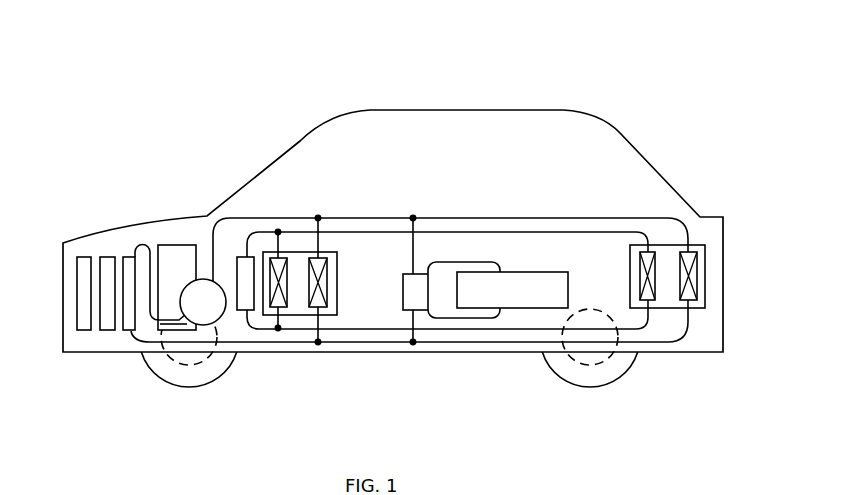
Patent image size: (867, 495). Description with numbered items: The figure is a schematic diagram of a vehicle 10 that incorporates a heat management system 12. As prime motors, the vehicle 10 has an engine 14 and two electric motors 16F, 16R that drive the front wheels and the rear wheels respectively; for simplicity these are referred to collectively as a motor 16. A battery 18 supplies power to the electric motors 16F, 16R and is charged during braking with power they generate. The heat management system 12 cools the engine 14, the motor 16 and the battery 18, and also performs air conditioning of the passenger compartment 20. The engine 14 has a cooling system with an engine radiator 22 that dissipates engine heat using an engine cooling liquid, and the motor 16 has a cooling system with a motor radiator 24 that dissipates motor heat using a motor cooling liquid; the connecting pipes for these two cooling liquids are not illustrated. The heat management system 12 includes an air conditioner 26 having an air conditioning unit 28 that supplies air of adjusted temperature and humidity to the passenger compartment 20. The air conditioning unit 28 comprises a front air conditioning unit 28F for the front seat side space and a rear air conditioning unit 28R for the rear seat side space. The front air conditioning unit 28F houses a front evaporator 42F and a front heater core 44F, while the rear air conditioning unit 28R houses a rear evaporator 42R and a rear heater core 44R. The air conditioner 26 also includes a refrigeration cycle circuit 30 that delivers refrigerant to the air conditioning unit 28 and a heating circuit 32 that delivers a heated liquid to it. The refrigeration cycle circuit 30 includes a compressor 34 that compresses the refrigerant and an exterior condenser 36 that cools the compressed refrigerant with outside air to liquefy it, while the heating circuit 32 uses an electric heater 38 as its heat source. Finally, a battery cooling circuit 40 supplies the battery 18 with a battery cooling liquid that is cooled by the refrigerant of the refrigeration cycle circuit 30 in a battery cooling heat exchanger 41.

The vehicle 10 is at (447, 87).
The heat management system 12 is at (258, 197).
The engine 14 is at (178, 245).
The motor 16 is at (374, 378).
The front electric motor 16F is at (174, 361).
The rear electric motor 16R is at (603, 363).
The battery 18 is at (528, 303).
The passenger compartment 20 is at (485, 155).
The engine radiator 22 is at (107, 262).
The motor radiator 24 is at (80, 262).
The air conditioner 26 is at (409, 260).
The air conditioning unit 28 is at (499, 289).
The front air conditioning unit 28F is at (318, 291).
The rear air conditioning unit 28R is at (691, 289).
The refrigeration cycle circuit 30 is at (355, 343).
The heating circuit 32 is at (398, 312).
The compressor 34 is at (203, 305).
The exterior condenser 36 is at (127, 331).
The electric heater 38 is at (245, 302).
The battery cooling circuit 40 is at (467, 252).
The battery cooling heat exchanger 41 is at (422, 298).
The front evaporator 42F is at (326, 310).
The rear evaporator 42R is at (698, 308).
The front heater core 44F is at (279, 308).
The rear heater core 44R is at (650, 303).